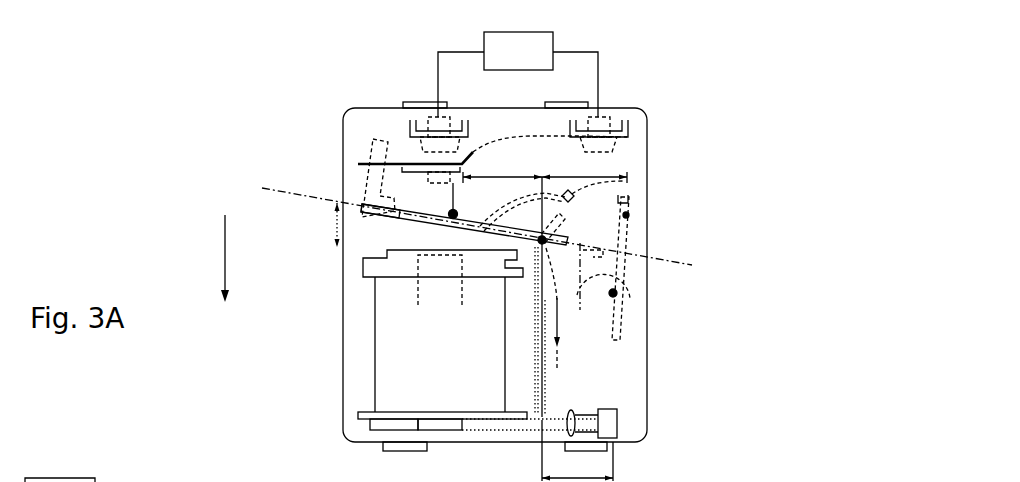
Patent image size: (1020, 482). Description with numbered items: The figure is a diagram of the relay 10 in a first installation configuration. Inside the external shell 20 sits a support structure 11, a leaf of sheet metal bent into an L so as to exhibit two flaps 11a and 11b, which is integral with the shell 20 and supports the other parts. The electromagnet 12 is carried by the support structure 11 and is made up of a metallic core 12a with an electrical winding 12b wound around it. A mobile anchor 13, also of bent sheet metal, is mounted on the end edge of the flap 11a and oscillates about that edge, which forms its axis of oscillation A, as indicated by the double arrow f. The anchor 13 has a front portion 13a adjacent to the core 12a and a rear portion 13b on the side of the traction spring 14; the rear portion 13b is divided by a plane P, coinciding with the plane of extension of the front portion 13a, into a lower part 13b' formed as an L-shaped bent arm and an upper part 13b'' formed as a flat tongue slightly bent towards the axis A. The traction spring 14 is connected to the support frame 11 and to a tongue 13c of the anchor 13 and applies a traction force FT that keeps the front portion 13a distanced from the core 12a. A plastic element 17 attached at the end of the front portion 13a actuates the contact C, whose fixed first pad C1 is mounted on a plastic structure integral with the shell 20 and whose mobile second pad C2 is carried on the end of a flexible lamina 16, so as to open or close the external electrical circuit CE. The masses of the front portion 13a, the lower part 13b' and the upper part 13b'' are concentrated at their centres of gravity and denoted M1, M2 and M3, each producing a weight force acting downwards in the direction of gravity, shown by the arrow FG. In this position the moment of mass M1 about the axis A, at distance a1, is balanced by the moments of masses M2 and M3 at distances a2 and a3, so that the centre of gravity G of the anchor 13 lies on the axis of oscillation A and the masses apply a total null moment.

The relay device 10 is at (252, 71).
The external shell 20 is at (648, 142).
The electrical circuit CE is at (518, 74).
The flexible lamina 16 is at (516, 135).
The contact C is at (375, 127).
The first pad C1 is at (422, 150).
The second pad C2 is at (420, 151).
The plane P is at (292, 190).
The plastic element 17 is at (365, 185).
The double arrow f is at (333, 227).
The force of gravity arrow FG is at (223, 262).
The mobile anchor 13 is at (481, 214).
The front portion 13a is at (402, 219).
The rear portion 13b is at (574, 276).
The lower part 13b' is at (579, 357).
The upper part 13b'' is at (654, 268).
The tongue 13c is at (628, 181).
The mass of front portion M1 is at (450, 211).
The mass of lower part M2 is at (618, 295).
The mass of upper part M3 is at (629, 215).
The axis of oscillation A is at (560, 243).
The centre of gravity G is at (573, 196).
The traction force FT is at (558, 323).
The lever arm of mass M1 a1 is at (502, 170).
The lever arm of mass M2 a2 is at (577, 450).
The lever arm of mass M3 a3 is at (584, 170).
The traction spring 14 is at (557, 378).
The electromagnet 12 is at (351, 345).
The metallic core 12a is at (418, 290).
The electrical winding 12b is at (432, 348).
The support structure 11 is at (518, 424).
The flap 11a is at (548, 398).
The flap 11b is at (382, 426).